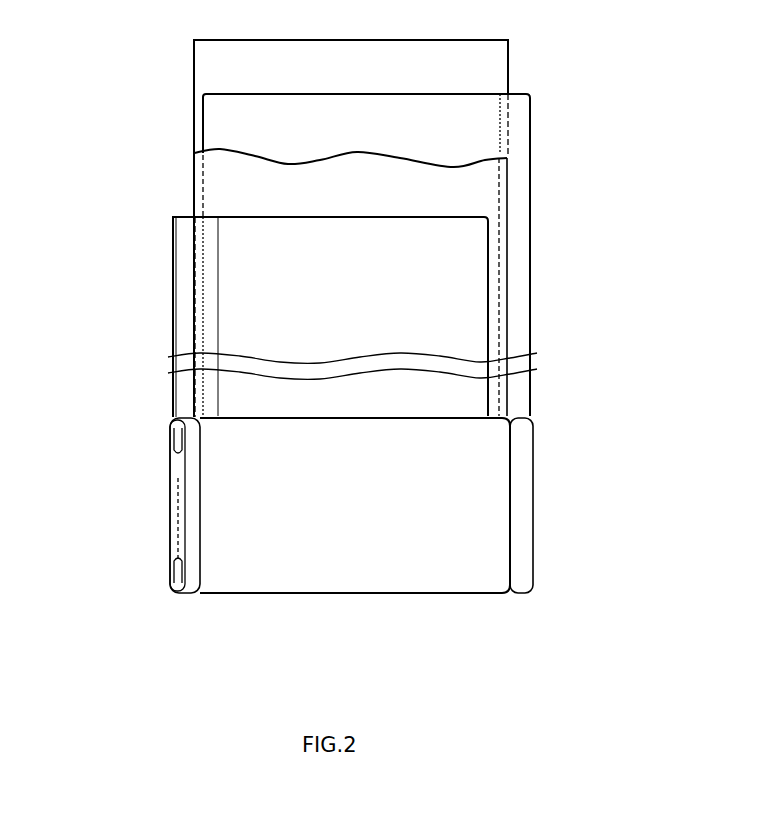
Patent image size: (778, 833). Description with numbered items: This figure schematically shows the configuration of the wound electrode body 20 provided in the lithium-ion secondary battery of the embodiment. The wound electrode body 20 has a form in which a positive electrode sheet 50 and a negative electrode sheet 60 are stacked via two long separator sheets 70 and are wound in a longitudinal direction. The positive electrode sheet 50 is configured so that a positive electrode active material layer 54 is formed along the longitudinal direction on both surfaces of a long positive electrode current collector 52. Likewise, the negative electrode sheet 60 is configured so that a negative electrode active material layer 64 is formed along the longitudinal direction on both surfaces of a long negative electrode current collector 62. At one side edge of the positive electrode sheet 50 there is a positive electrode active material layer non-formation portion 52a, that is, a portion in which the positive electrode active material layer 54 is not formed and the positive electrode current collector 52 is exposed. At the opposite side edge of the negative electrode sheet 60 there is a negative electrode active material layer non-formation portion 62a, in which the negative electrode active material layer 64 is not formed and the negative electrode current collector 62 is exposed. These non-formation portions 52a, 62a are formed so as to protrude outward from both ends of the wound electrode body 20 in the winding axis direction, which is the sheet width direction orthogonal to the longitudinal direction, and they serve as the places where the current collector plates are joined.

The wound electrode body 20 is at (410, 577).
The positive electrode sheet 50 is at (307, 317).
The positive electrode current collector 52 is at (170, 347).
The positive electrode active material layer non-formation portion 52a is at (188, 318).
The positive electrode active material layer 54 is at (232, 232).
The negative electrode sheet 60 is at (409, 254).
The negative electrode current collector 62 is at (531, 263).
The negative electrode active material layer non-formation portion 62a is at (518, 233).
The negative electrode active material layer 64 is at (497, 113).
The separator sheet 70 is at (215, 58).